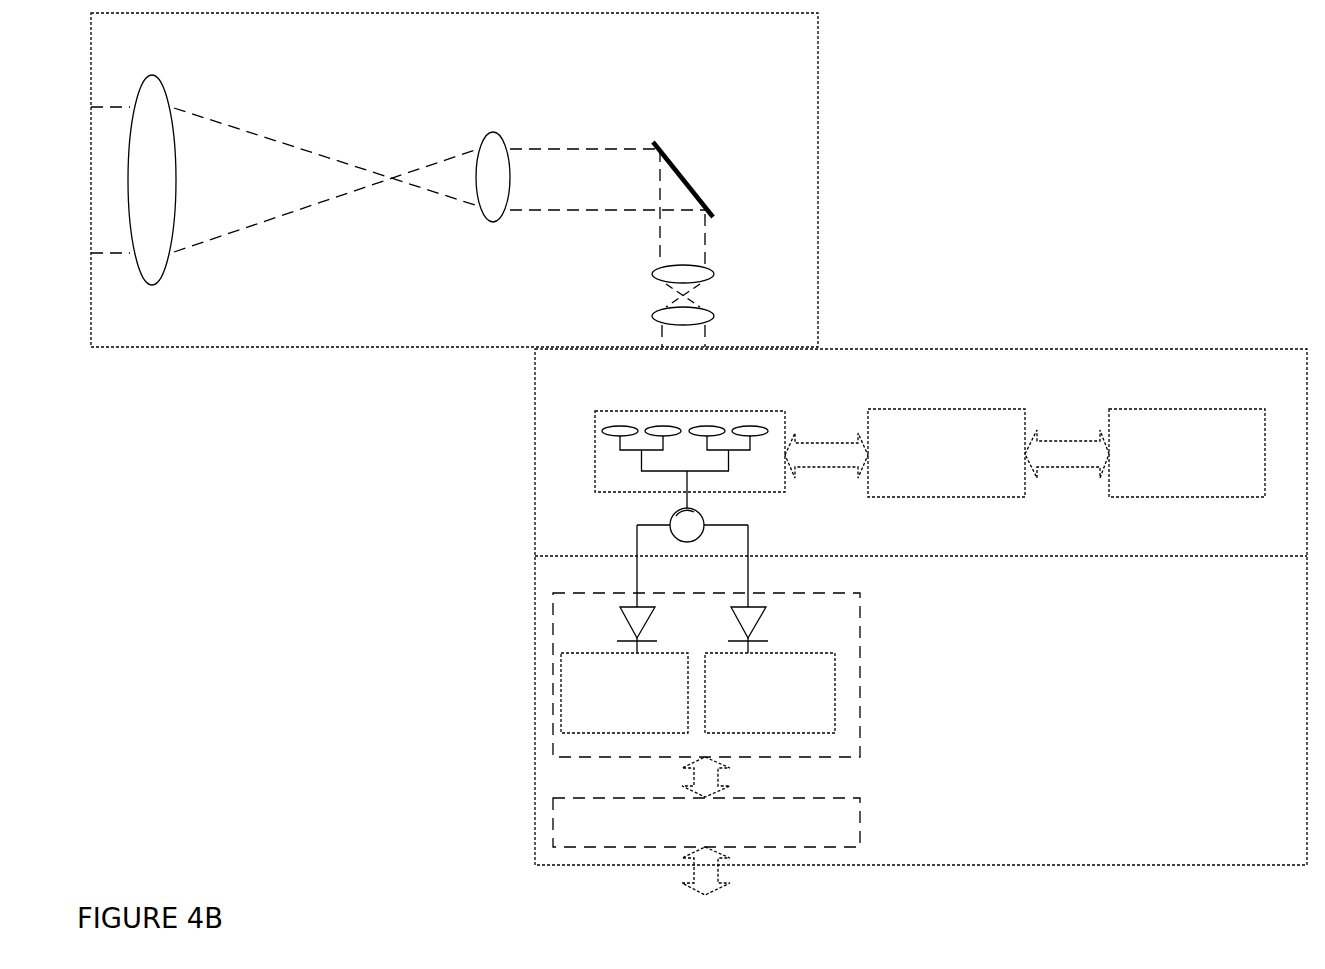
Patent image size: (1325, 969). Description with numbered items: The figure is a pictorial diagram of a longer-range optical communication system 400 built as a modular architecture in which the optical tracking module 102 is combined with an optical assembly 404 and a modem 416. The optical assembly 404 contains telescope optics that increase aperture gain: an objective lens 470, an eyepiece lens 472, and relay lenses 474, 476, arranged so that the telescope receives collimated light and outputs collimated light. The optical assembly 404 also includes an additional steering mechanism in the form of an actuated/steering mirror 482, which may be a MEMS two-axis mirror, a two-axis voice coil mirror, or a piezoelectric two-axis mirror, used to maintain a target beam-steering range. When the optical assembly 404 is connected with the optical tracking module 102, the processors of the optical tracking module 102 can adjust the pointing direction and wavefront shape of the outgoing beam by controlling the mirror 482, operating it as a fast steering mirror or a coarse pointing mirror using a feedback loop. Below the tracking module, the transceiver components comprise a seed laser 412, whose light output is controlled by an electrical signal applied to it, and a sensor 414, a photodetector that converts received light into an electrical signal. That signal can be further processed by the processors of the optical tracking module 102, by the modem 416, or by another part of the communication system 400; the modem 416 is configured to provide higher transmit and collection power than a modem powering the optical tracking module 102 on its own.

The optical communication system 400 is at (167, 891).
The optical assembly 404 is at (591, 49).
The optical tracking module 102 is at (978, 384).
The objective lens 470 is at (163, 85).
The eyepiece lens 472 is at (507, 136).
The relay lens 474 is at (714, 271).
The relay lens 476 is at (714, 313).
The actuated/steering mirror 482 is at (656, 140).
The seed laser 412 is at (645, 689).
The sensor 414 is at (790, 689).
The modem 416 is at (635, 832).